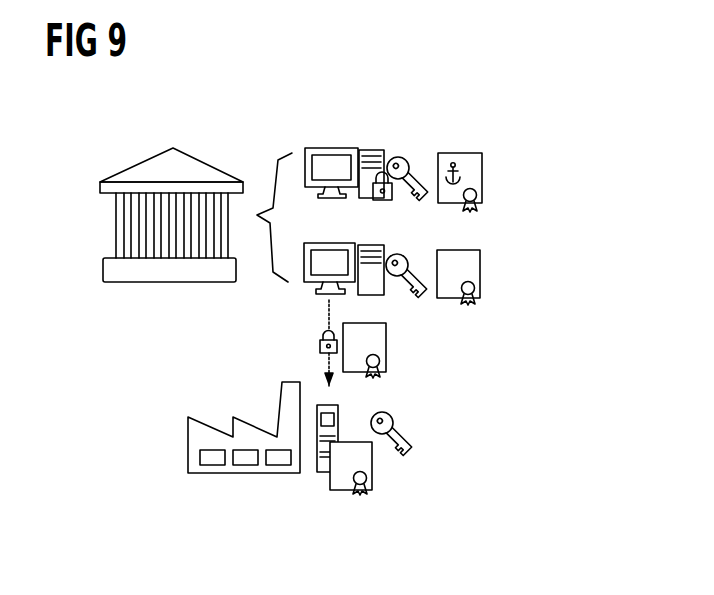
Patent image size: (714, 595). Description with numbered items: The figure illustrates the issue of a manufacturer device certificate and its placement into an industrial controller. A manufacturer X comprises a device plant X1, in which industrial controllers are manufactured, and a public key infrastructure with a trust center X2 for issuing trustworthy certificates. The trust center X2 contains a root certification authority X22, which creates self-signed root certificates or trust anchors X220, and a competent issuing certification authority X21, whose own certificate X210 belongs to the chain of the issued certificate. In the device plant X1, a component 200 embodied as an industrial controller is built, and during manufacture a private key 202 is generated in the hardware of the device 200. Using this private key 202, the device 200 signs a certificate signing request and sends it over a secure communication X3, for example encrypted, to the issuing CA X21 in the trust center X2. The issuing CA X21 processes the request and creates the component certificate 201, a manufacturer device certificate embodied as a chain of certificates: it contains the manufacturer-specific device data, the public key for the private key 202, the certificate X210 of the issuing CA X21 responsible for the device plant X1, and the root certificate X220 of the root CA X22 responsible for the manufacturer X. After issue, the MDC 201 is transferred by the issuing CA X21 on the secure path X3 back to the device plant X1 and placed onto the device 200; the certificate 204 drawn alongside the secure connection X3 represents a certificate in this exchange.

The manufacturer X is at (420, 107).
The trust center X2 is at (116, 222).
The root certification authority X22 is at (328, 150).
The root certificate X220 is at (482, 172).
The issuing certification authority X21 is at (330, 243).
The certificate of the issuing CA X210 is at (481, 266).
The secure communication X3 is at (318, 340).
The certificate 204 is at (387, 337).
The device plant X1 is at (188, 442).
The component 200 is at (320, 475).
The component certificate 201 is at (375, 460).
The private key 202 is at (401, 412).